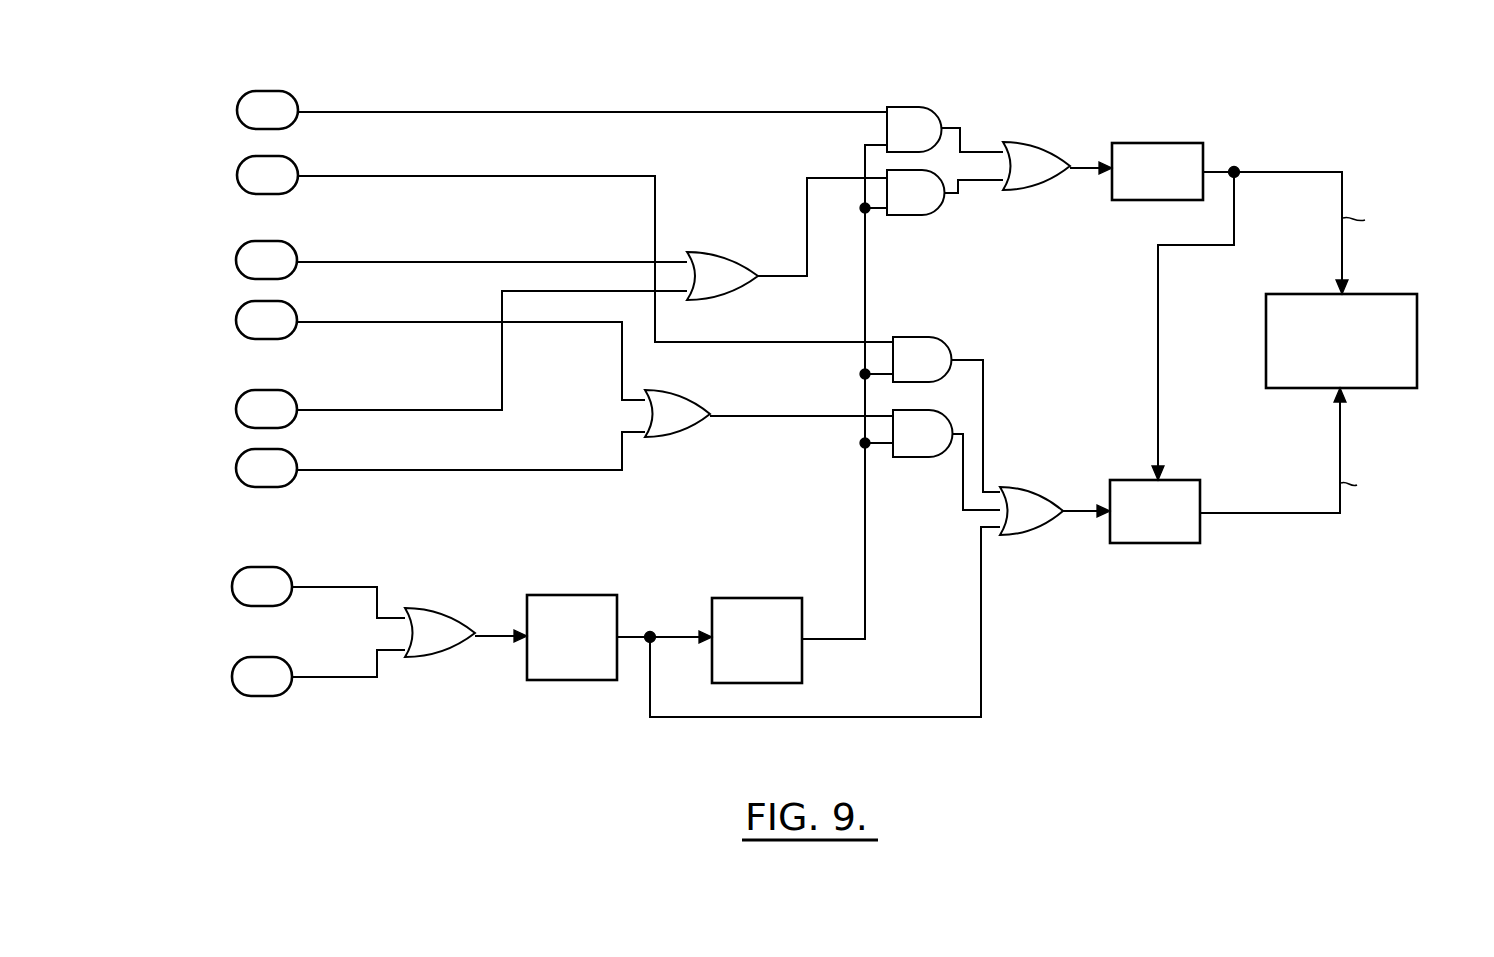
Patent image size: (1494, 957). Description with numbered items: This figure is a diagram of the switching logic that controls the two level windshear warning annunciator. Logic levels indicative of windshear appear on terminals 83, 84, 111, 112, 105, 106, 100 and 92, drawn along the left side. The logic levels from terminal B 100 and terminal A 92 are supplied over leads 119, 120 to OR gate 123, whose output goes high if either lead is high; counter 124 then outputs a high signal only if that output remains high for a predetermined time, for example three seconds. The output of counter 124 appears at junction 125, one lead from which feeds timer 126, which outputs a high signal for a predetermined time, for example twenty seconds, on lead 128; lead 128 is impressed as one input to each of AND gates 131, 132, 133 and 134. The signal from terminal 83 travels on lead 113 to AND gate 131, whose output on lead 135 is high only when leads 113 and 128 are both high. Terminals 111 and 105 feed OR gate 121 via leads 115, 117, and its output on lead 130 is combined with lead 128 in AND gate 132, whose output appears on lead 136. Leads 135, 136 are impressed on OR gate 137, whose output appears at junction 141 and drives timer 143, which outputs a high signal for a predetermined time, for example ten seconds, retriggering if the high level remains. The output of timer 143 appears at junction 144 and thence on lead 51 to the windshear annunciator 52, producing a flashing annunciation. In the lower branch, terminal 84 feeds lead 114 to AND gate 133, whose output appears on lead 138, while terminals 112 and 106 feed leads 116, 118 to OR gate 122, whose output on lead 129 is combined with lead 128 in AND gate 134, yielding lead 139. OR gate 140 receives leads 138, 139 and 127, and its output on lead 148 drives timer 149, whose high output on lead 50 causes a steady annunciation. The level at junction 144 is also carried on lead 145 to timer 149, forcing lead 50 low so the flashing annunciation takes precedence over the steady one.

The terminal 83 is at (237, 110).
The terminal 84 is at (237, 175).
The terminal 111 is at (236, 260).
The terminal 112 is at (236, 321).
The terminal 105 is at (236, 409).
The terminal 106 is at (236, 468).
The terminal B 100 is at (232, 586).
The terminal A 92 is at (232, 676).
The lead 113 is at (436, 112).
The lead 114 is at (436, 176).
The lead 115 is at (436, 262).
The lead 116 is at (406, 322).
The lead 117 is at (391, 410).
The lead 118 is at (396, 470).
The lead 119 is at (341, 587).
The lead 120 is at (345, 680).
The OR gate 121 is at (737, 252).
The OR gate 122 is at (691, 391).
The OR gate 123 is at (432, 608).
The counter 124 is at (562, 595).
The junction 125 is at (652, 632).
The timer 126 is at (746, 598).
The lead 127 is at (924, 716).
The lead 128 is at (859, 526).
The lead 129 is at (761, 414).
The lead 130 is at (807, 202).
The AND gate 131 is at (912, 107).
The AND gate 132 is at (927, 215).
The AND gate 133 is at (918, 337).
The AND gate 134 is at (922, 457).
The lead 135 is at (962, 125).
The lead 136 is at (962, 196).
The OR gate 137 is at (1041, 142).
The lead 138 is at (979, 352).
The lead 139 is at (962, 513).
The OR gate 140 is at (1028, 487).
The junction 141 is at (1083, 170).
The timer 143 is at (1153, 143).
The junction 144 is at (1238, 166).
The lead 145 is at (1158, 310).
The lead 148 is at (1090, 518).
The timer 149 is at (1148, 543).
The lead 51 is at (1342, 253).
The windshear annunciator 52 is at (1417, 345).
The lead 50 is at (1340, 450).